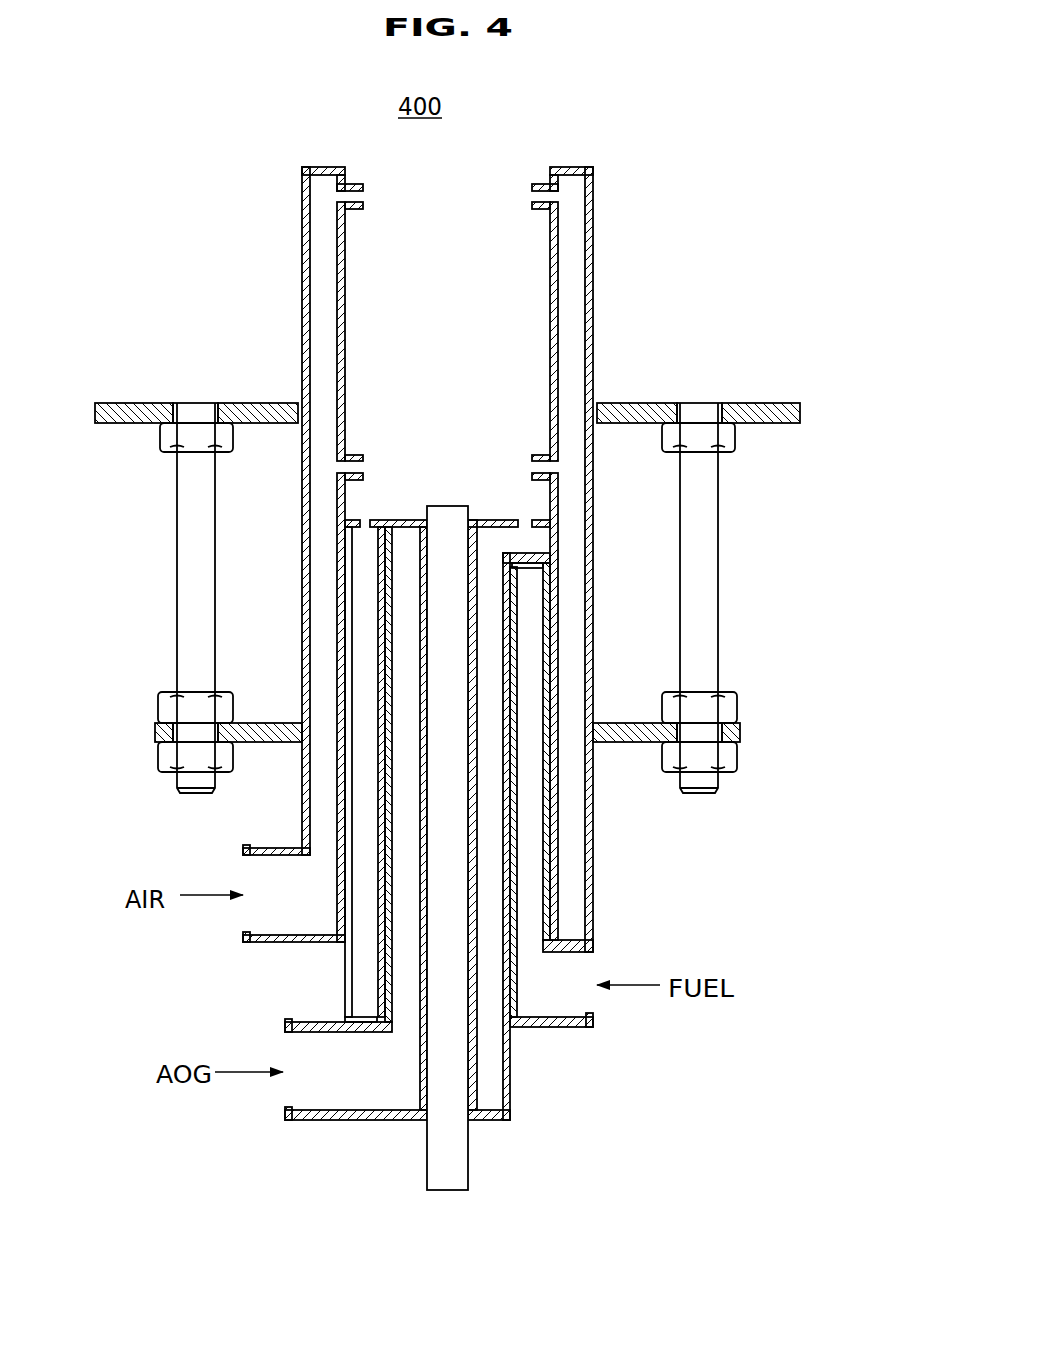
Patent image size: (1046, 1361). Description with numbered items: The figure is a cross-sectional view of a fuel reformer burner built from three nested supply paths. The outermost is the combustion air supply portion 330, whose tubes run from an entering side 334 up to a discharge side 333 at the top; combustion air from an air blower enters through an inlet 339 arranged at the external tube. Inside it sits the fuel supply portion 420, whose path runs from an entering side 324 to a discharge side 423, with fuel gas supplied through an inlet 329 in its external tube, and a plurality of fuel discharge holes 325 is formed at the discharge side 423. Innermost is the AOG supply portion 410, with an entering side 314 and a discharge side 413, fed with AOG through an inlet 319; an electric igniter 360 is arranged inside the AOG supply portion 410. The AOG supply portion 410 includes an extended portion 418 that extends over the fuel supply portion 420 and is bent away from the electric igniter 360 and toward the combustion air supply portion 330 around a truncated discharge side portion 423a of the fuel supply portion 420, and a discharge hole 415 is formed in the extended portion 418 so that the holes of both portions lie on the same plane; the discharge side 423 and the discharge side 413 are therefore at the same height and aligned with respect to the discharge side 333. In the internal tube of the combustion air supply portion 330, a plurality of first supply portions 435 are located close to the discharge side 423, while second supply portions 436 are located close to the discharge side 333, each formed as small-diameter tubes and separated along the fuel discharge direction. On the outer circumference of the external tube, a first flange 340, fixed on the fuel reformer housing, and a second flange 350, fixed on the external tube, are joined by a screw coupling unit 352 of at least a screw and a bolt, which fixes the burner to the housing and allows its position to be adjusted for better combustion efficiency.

The combustion air supply portion 330 is at (605, 314).
The discharge side 333 is at (571, 166).
The inlet 339 is at (266, 847).
The second supply portions 436 is at (355, 206).
The first supply portions 435 is at (350, 456).
The discharge side 423 is at (341, 514).
The entering side 334 is at (322, 941).
The discharge hole 415 is at (528, 521).
The extended portion 418 is at (553, 542).
The truncated discharge side portion 423a is at (530, 569).
The inlet 329 is at (558, 1024).
The fuel supply portion 420 is at (539, 1040).
The entering side 314 is at (490, 1121).
The discharge side 413 is at (407, 520).
The fuel discharge holes 325 is at (367, 520).
The entering side 324 is at (372, 1019).
The inlet 319 is at (385, 1121).
The AOG supply portion 410 is at (327, 1171).
The electric igniter 360 is at (455, 1191).
The first flange 340 is at (802, 413).
The second flange 350 is at (742, 731).
The screw coupling unit 352 is at (175, 578).